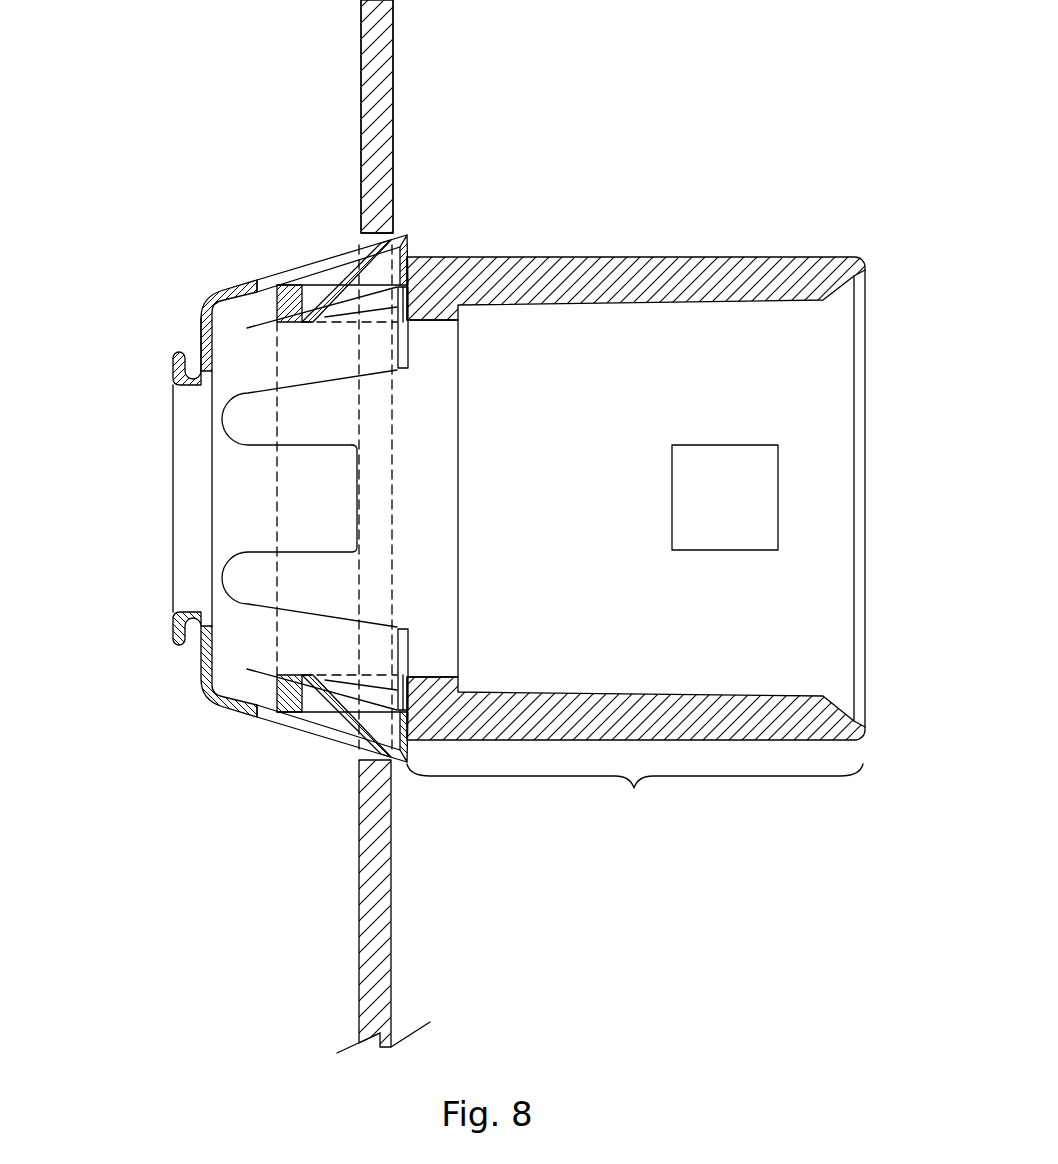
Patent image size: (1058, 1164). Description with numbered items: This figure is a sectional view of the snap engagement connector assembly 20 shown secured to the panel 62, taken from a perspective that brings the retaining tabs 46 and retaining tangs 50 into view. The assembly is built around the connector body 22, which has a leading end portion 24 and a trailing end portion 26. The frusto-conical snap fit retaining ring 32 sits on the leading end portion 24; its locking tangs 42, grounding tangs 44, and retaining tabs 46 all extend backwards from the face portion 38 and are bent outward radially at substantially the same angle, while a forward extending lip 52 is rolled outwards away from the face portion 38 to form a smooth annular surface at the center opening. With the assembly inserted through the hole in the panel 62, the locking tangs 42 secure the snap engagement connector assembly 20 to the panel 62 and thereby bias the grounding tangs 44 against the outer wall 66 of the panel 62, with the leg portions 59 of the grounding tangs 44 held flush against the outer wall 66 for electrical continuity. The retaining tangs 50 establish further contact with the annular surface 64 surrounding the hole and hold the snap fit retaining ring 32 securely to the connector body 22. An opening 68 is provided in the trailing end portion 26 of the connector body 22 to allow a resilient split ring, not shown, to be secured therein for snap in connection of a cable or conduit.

The snap engagement connector assembly 20 is at (150, 204).
The connector body 22 is at (655, 258).
The leading end portion 24 is at (273, 578).
The trailing end portion 26 is at (635, 793).
The snap fit retaining ring 32 is at (203, 298).
The face portion 38 is at (203, 327).
The locking tangs 42 is at (304, 510).
The grounding tangs 44 is at (321, 365).
The retaining tabs 46 is at (280, 272).
The retaining tangs 50 is at (323, 287).
The forward extending lip 52 is at (178, 366).
The leg portions 59 is at (410, 337).
The panel 62 is at (390, 47).
The annular surface 64 is at (410, 263).
The outer wall 66 is at (394, 97).
The opening 68 is at (708, 510).